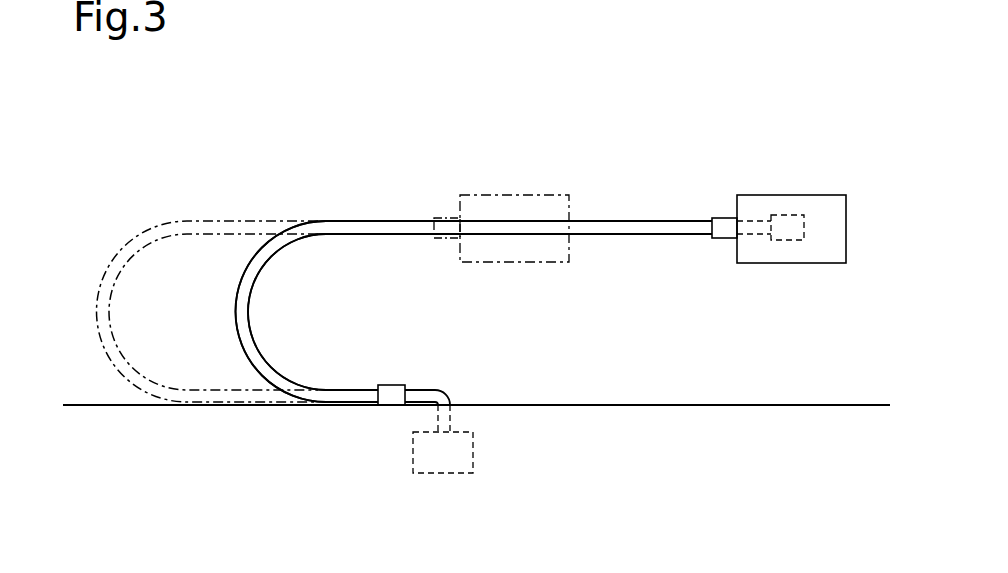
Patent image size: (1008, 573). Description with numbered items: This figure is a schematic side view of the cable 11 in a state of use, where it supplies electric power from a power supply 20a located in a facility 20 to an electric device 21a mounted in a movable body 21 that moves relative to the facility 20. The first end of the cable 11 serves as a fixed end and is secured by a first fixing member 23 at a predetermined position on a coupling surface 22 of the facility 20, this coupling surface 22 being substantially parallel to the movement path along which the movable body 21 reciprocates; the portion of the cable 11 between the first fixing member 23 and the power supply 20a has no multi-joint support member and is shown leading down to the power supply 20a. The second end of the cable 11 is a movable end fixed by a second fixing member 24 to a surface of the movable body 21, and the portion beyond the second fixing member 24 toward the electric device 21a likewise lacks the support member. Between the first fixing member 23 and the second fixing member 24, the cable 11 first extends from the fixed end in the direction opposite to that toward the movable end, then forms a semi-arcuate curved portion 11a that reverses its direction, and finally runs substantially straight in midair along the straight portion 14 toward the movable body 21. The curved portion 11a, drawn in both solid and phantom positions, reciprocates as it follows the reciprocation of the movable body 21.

The cable 11 is at (370, 214).
The curved portion 11a is at (100, 288).
The straight portion of tube 14 is at (640, 218).
The facility 20 is at (832, 400).
The power supply 20a is at (473, 450).
The movable body 21 is at (548, 195).
The electric device 21a is at (785, 242).
The coupling surface 22 is at (590, 404).
The first fixing member 23 is at (393, 385).
The second fixing member 24 is at (446, 218).